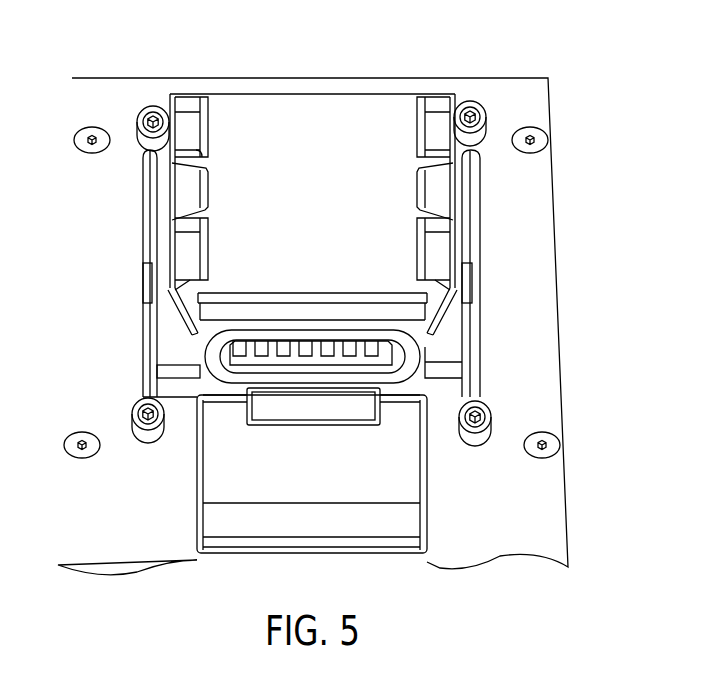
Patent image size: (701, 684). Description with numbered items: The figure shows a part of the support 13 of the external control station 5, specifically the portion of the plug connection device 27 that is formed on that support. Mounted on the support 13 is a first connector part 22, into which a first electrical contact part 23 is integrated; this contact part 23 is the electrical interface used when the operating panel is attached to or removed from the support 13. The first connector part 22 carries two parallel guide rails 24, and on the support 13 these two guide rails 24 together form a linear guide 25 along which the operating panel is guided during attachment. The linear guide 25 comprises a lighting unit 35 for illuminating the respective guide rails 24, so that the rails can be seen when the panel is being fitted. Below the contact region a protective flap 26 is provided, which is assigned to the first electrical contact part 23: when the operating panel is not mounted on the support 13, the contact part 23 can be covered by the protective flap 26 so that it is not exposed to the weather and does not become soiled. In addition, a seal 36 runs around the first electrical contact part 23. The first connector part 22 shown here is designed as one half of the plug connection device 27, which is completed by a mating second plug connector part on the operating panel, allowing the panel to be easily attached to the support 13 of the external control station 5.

The external control station 5 is at (366, 282).
The support 13 is at (533, 72).
The first connector part 22 is at (276, 143).
The first electrical contact part 23 is at (277, 323).
The guide rails 24 is at (440, 184).
The linear guide 25 is at (174, 331).
The protective flap 26 is at (327, 477).
The plug connection device 27 is at (332, 128).
The lighting unit 35 is at (150, 283).
The seal 36 is at (312, 342).